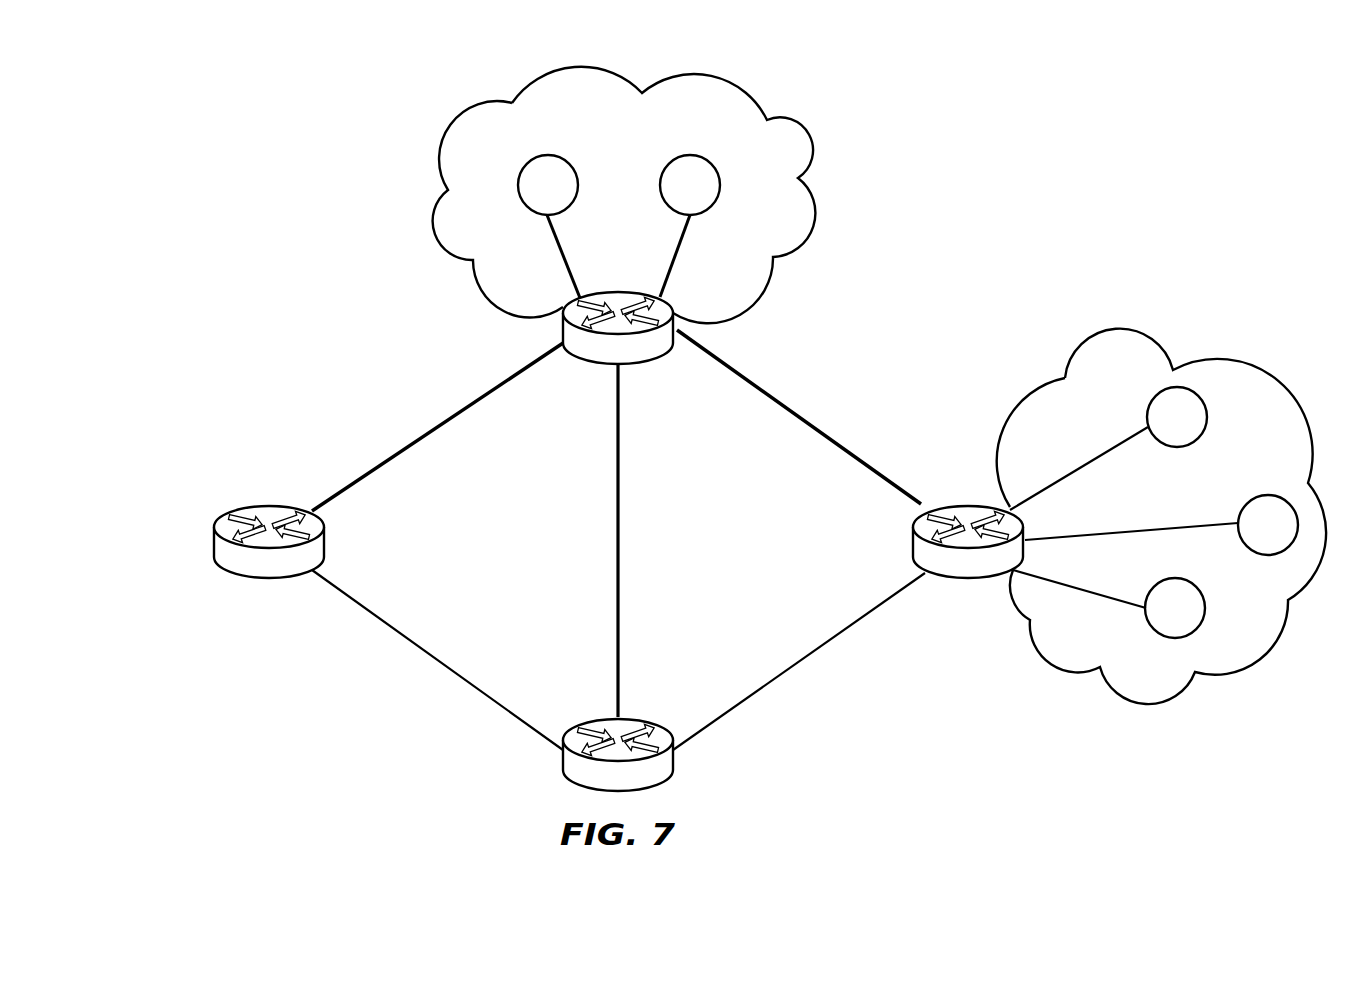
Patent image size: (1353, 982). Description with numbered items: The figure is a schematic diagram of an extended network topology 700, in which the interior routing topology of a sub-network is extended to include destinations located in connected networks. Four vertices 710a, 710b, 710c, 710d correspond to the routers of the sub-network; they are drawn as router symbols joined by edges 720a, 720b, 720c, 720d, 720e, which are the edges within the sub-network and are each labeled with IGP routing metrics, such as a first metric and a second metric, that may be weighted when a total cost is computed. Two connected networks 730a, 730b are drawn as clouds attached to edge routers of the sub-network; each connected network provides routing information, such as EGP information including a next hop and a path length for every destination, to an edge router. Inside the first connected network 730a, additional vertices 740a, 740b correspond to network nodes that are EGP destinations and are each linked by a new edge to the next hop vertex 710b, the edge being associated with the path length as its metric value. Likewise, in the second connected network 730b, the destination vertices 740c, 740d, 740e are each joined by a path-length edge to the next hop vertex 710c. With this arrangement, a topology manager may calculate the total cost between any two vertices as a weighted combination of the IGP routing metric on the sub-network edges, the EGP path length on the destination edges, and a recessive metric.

The extended network topology 700 is at (243, 92).
The vertex 710a is at (213, 542).
The vertex 710b is at (596, 363).
The vertex 710c is at (912, 543).
The vertex 710d is at (600, 718).
The edge 720a is at (371, 465).
The edge 720b is at (617, 465).
The edge 720c is at (408, 642).
The edge 720d is at (767, 398).
The edge 720e is at (826, 642).
The connected network 730a is at (458, 131).
The connected network 730b is at (1123, 328).
The vertex 740a is at (548, 155).
The vertex 740b is at (691, 155).
The vertex 740c is at (1162, 391).
The vertex 740d is at (1264, 497).
The vertex 740e is at (1203, 594).